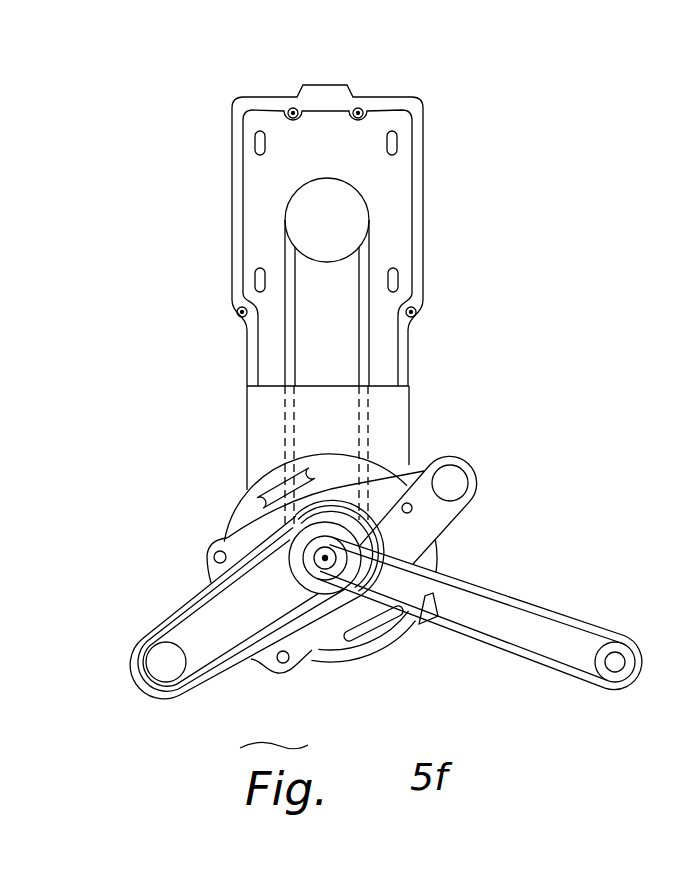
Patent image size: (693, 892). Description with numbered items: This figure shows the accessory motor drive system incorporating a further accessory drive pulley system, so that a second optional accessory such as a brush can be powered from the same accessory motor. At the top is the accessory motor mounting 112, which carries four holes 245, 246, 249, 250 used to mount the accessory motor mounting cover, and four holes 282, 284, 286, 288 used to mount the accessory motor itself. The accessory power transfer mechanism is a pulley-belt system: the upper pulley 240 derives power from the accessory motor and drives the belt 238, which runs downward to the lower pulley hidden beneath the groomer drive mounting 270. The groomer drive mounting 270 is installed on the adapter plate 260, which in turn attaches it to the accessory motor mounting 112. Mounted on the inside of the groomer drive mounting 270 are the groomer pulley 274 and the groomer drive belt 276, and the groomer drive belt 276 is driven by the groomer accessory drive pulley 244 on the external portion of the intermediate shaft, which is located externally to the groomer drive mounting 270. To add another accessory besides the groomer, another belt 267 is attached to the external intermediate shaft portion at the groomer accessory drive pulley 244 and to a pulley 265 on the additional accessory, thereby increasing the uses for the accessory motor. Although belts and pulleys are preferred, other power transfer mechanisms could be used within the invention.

The accessory motor mounting 112 is at (428, 105).
The belt 238 is at (371, 358).
The upper pulley 240 is at (364, 206).
The groomer accessory drive pulley 244 is at (446, 458).
The hole 245 is at (360, 107).
The hole 246 is at (417, 312).
The hole 249 is at (237, 312).
The hole 250 is at (293, 107).
The adapter plate 260 is at (262, 412).
The pulley 265 is at (622, 647).
The belt 267 is at (600, 640).
The groomer drive mounting 270 is at (232, 540).
The groomer pulley 274 is at (166, 662).
The groomer drive belt 276 is at (146, 632).
The hole 282 is at (255, 145).
The hole 284 is at (397, 142).
The hole 286 is at (398, 278).
The hole 288 is at (256, 281).